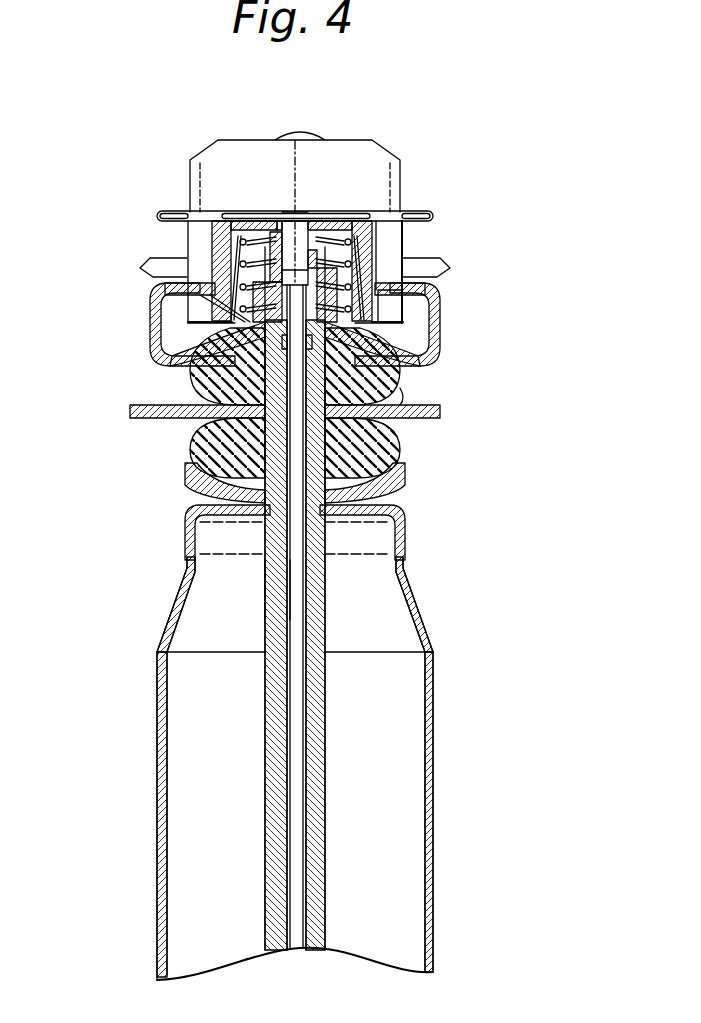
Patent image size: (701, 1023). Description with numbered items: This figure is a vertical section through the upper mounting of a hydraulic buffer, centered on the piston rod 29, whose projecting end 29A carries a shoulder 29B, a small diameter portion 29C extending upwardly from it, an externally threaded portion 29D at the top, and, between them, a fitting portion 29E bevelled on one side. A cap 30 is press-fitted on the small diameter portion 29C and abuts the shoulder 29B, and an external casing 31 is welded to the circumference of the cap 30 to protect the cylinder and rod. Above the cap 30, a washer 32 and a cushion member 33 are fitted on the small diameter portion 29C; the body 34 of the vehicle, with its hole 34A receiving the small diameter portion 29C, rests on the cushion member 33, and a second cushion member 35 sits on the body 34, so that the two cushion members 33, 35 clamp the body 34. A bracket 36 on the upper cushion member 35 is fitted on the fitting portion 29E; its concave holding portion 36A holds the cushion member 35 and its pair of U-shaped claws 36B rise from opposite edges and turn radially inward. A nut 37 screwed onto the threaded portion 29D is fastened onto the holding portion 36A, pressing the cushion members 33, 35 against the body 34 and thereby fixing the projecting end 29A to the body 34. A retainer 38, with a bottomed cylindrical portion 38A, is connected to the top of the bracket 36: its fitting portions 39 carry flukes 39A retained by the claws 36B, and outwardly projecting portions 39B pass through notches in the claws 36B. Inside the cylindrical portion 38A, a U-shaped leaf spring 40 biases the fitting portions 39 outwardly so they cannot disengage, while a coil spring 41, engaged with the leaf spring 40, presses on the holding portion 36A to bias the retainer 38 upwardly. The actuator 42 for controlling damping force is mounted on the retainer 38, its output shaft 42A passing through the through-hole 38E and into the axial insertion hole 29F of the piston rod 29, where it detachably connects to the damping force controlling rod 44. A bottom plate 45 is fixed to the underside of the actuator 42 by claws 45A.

The piston rod 29 is at (327, 770).
The projecting end 29A is at (265, 593).
The shoulder 29B is at (330, 483).
The small diameter portion 29C is at (327, 437).
The externally threaded portion 29D is at (323, 237).
The fitting portion 29E is at (262, 345).
The axial insertion hole 29F is at (300, 592).
The cap 30 is at (193, 533).
The external casing 31 is at (157, 763).
The washer 32 is at (195, 482).
The cushion member 33 is at (200, 446).
The body 34 is at (432, 411).
The hole 34A is at (405, 392).
The cushion member 35 is at (205, 372).
The bracket 36 is at (449, 312).
The holding portion 36A is at (400, 342).
The claws 36B is at (165, 285).
The nut 37 is at (380, 282).
The retainer 38 is at (230, 253).
The cylindrical portion 38A is at (377, 253).
The through-hole 38E is at (268, 232).
The fitting portions 39 is at (232, 262).
The flukes 39A is at (200, 320).
The outwardly projecting portion 39B is at (440, 268).
The leaf spring 40 is at (243, 290).
The coil spring 41 is at (258, 300).
The actuator 42 is at (378, 150).
The output shaft 42A is at (287, 222).
The damping force controlling rod 44 is at (300, 648).
The bottom plate 45 is at (185, 240).
The claws 45A is at (197, 217).